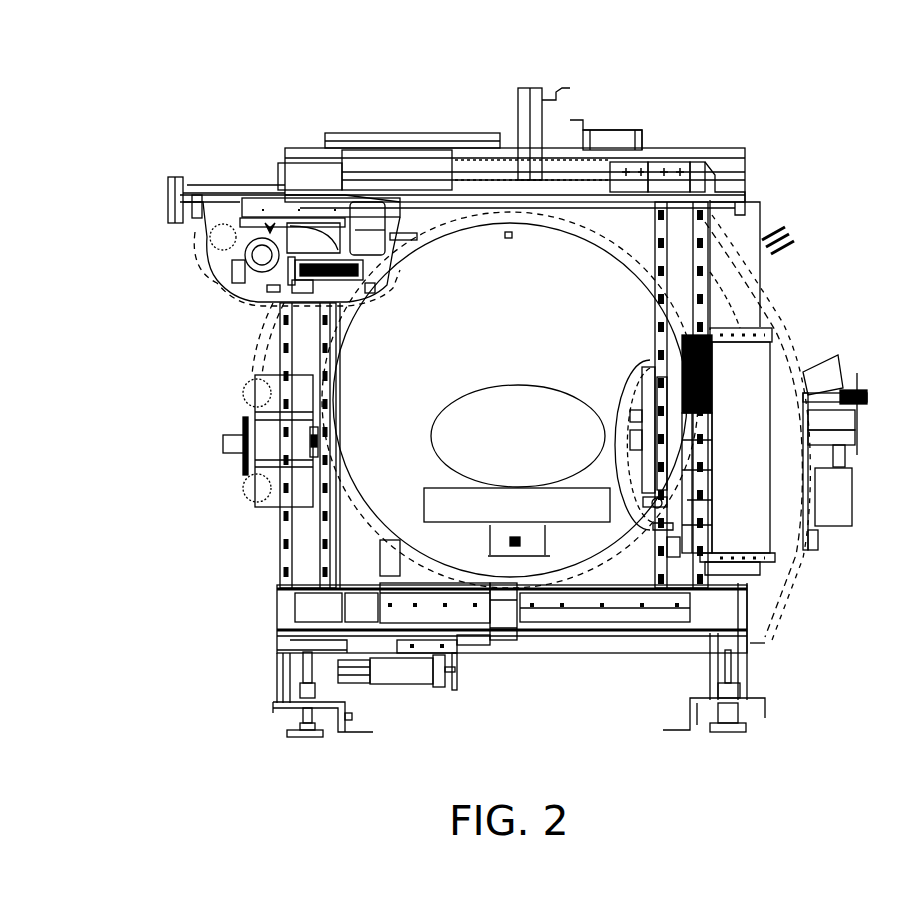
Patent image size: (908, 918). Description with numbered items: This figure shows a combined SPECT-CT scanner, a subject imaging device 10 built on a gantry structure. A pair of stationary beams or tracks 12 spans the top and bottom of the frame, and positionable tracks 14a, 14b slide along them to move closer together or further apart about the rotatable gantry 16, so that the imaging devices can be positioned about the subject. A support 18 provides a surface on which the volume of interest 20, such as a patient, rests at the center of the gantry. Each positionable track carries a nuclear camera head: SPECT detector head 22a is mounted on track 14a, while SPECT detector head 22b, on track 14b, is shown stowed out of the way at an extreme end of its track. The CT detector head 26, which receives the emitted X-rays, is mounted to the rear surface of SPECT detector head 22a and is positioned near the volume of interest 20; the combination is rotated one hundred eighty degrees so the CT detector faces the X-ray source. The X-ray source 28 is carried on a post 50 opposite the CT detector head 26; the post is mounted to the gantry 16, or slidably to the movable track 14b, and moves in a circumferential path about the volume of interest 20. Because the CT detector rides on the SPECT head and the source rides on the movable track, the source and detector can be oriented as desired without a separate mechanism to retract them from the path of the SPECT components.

The subject imaging device 10 is at (236, 93).
The stationary tracks 12 is at (715, 162).
The positionable track 14a is at (687, 238).
The positionable track 14b is at (305, 525).
The rotatable gantry 16 is at (733, 280).
The support 18 is at (532, 516).
The volume of interest 20 is at (532, 449).
The SPECT detector head 22a is at (750, 385).
The SPECT detector head 22b is at (177, 198).
The CT detector head 26 is at (653, 393).
The X-ray source 28 is at (268, 440).
The post 50 is at (237, 440).